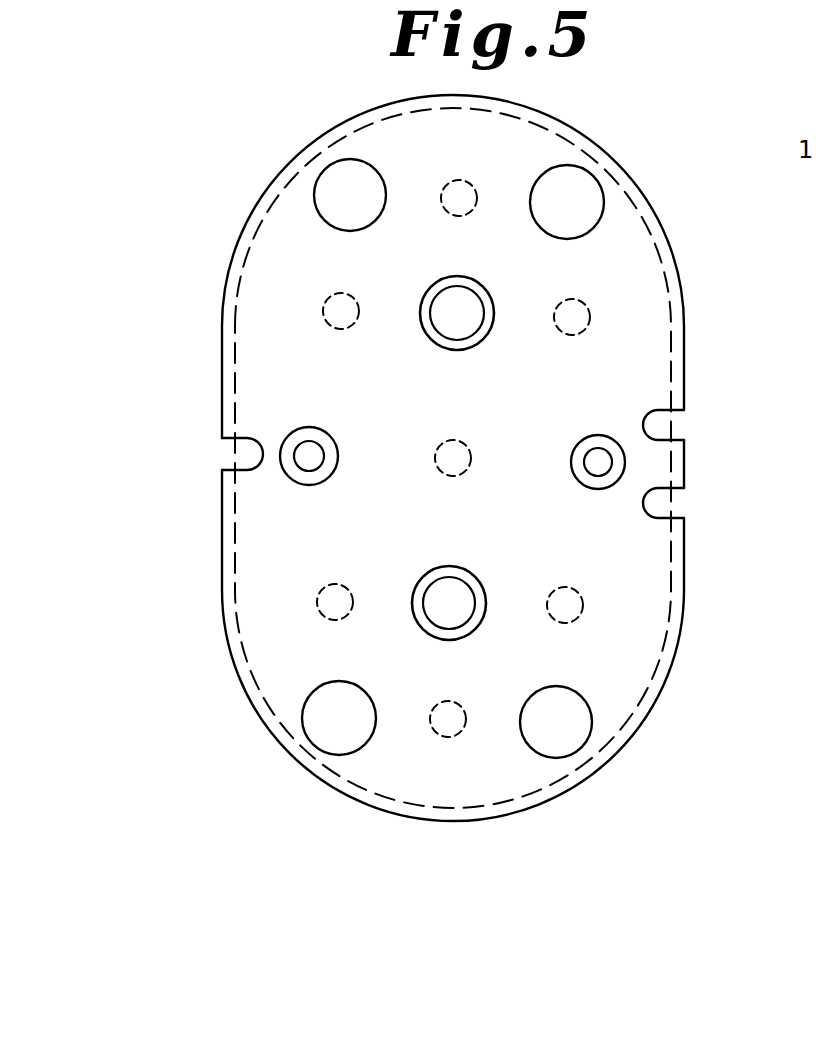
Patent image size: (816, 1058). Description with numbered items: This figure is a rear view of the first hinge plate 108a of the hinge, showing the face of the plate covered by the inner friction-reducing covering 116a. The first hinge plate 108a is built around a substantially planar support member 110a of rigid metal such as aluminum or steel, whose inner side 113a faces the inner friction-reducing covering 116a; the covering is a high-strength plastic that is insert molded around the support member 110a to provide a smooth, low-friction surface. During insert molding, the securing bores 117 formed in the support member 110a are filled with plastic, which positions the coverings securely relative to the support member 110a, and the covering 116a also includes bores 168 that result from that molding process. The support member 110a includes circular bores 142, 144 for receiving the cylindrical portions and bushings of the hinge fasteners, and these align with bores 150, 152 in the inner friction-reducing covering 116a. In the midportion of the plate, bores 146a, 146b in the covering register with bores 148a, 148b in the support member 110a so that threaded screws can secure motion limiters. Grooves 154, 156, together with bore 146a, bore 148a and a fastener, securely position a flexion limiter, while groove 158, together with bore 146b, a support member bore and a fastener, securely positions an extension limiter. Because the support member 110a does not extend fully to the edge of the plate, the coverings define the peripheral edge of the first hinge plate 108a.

The first hinge plate 108a is at (650, 741).
The support member 110a is at (573, 130).
The inner side 113a is at (582, 207).
The inner friction-reducing covering 116a is at (272, 312).
The securing bores 117 is at (442, 186).
The circular bore 142 is at (438, 293).
The circular bore 144 is at (432, 580).
The bore 146a is at (584, 452).
The bore 146b is at (320, 444).
The bore 148a is at (597, 434).
The bore 148b is at (283, 437).
The bore 150 is at (478, 290).
The bore 152 is at (473, 578).
The groove 154 is at (668, 423).
The groove 156 is at (668, 503).
The groove 158 is at (237, 453).
The bores 168 is at (602, 184).